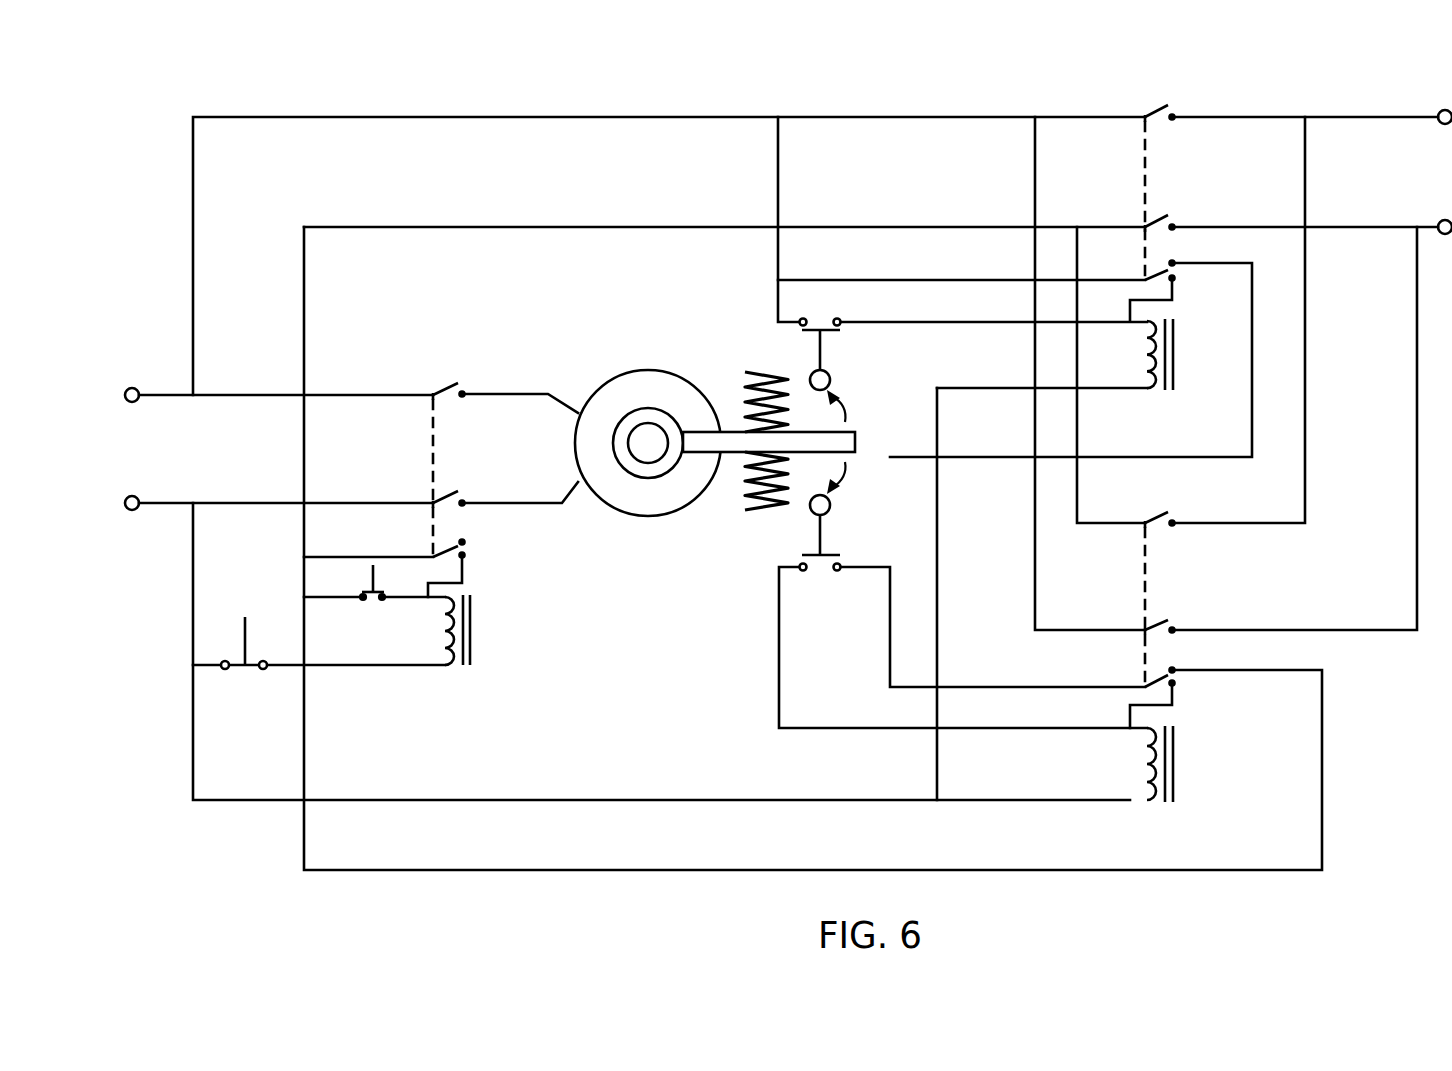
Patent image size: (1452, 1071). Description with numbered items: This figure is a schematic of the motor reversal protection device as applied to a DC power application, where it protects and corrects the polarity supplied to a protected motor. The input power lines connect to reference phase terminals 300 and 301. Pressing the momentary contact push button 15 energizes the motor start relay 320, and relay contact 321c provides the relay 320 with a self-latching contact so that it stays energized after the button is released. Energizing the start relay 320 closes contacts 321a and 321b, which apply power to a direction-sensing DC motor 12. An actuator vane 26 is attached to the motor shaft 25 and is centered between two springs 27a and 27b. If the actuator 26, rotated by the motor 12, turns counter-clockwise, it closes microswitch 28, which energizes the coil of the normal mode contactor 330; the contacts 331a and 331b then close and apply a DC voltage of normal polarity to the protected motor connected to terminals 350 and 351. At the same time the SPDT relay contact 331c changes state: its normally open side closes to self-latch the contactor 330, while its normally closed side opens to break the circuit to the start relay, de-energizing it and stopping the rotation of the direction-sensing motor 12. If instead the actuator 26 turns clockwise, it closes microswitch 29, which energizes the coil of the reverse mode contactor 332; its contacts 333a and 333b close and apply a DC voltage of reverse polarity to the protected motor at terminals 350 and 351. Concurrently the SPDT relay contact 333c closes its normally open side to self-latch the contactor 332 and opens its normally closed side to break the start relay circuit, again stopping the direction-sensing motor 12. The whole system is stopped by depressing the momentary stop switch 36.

The direction-sensing DC motor 12 is at (623, 375).
The momentary contact push button 15 is at (370, 580).
The motor shaft 25 is at (645, 452).
The actuator vane 26 is at (740, 428).
The spring 27a is at (765, 374).
The spring 27b is at (768, 508).
The microswitch 28 is at (822, 358).
The microswitch 29 is at (822, 531).
The momentary stop switch 36 is at (267, 661).
The reference phase terminal 300 is at (133, 388).
The reference phase terminal 301 is at (133, 496).
The motor start relay 320 is at (473, 635).
The relay contact 321a is at (430, 392).
The relay contact 321b is at (433, 500).
The relay contact 321c is at (433, 556).
The normal mode contactor 330 is at (1158, 390).
The contact 331a is at (1143, 114).
The contact 331b is at (1143, 225).
The SPDT relay contact 331c is at (1143, 278).
The reverse mode contactor 332 is at (1175, 770).
The contact 333a is at (1145, 518).
The contact 333b is at (1145, 628).
The SPDT relay contact 333c is at (1145, 683).
The terminal 350 is at (1440, 105).
The terminal 351 is at (1440, 215).